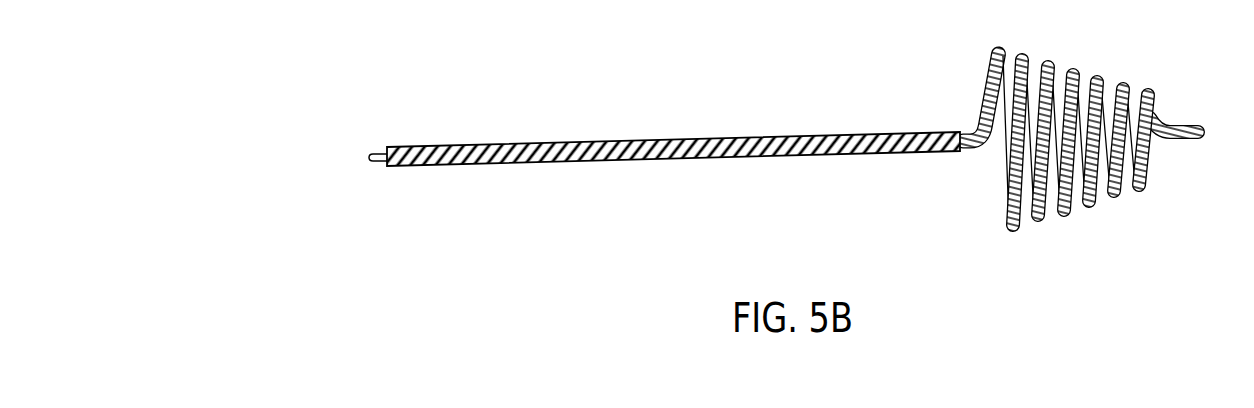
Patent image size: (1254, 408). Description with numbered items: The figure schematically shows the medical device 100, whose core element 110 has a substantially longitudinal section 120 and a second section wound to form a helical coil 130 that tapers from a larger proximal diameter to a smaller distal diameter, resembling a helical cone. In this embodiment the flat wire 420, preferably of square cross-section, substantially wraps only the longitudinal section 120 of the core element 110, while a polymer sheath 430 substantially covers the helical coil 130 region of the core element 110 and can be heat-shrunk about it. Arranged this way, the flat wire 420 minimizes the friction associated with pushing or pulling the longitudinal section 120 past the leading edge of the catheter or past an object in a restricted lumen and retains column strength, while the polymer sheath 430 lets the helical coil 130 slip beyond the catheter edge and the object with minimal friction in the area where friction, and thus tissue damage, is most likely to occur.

The medical device 100 is at (812, 89).
The core element 110 is at (375, 151).
The longitudinal section 120 is at (960, 181).
The helical coil 130 is at (1212, 237).
The flat wire 420 is at (614, 141).
The polymer sheath 430 is at (1081, 68).